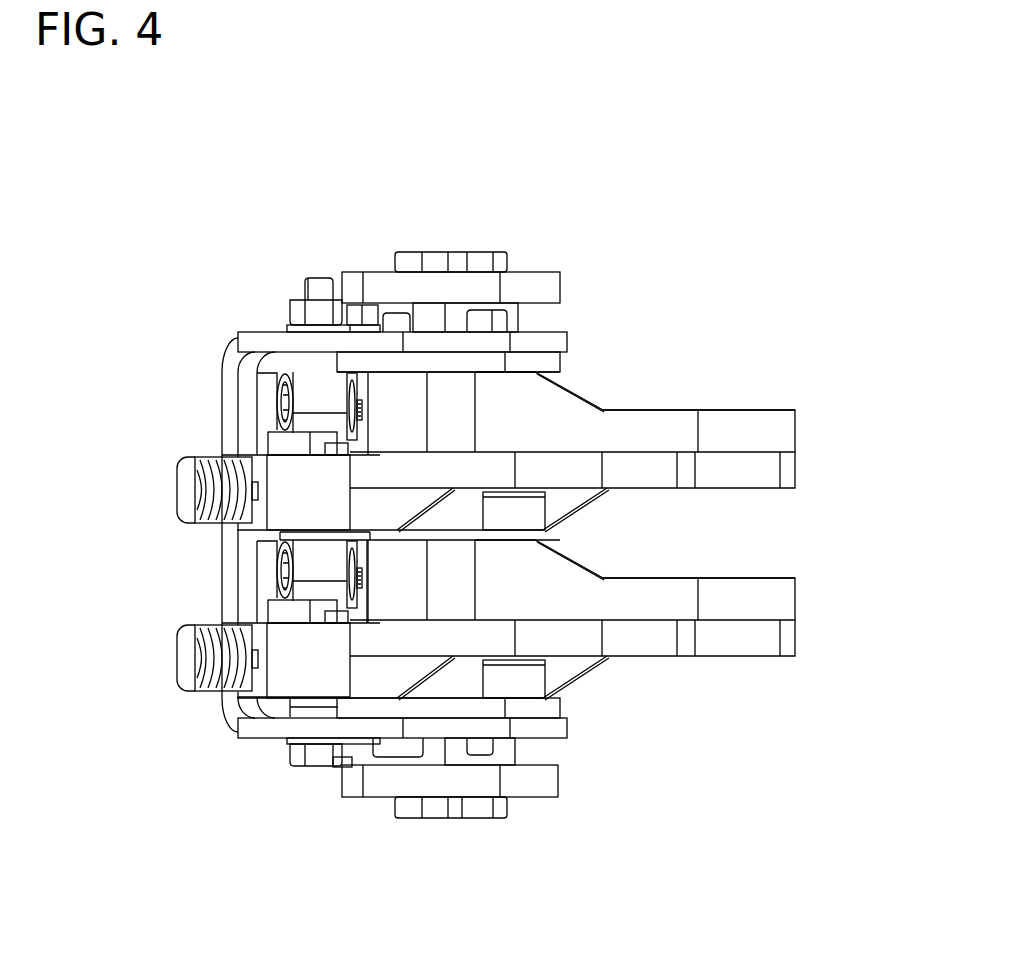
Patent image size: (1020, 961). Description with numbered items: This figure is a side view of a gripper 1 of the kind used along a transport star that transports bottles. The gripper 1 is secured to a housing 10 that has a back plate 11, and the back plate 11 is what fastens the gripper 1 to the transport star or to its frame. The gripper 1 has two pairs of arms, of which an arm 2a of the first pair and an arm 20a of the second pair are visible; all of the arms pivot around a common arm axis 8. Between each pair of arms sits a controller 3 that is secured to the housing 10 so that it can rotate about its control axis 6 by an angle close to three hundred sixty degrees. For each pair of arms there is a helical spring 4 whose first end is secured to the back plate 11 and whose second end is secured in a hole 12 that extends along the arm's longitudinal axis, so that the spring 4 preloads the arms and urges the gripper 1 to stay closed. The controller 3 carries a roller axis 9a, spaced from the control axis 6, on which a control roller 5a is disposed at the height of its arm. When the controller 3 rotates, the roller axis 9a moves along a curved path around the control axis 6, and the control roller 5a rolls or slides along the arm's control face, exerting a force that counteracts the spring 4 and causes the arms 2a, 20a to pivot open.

The gripper 1 is at (410, 170).
The arm 2a is at (480, 470).
The controller 3 is at (450, 838).
The spring 4 is at (195, 470).
The control roller 5a is at (458, 505).
The control axis 6 is at (487, 243).
The arm axis 8 is at (302, 268).
The first roller axis 9a is at (455, 395).
The housing 10 is at (258, 335).
The back plate 11 is at (180, 502).
The hole 12 is at (193, 492).
The arm 20a is at (583, 636).